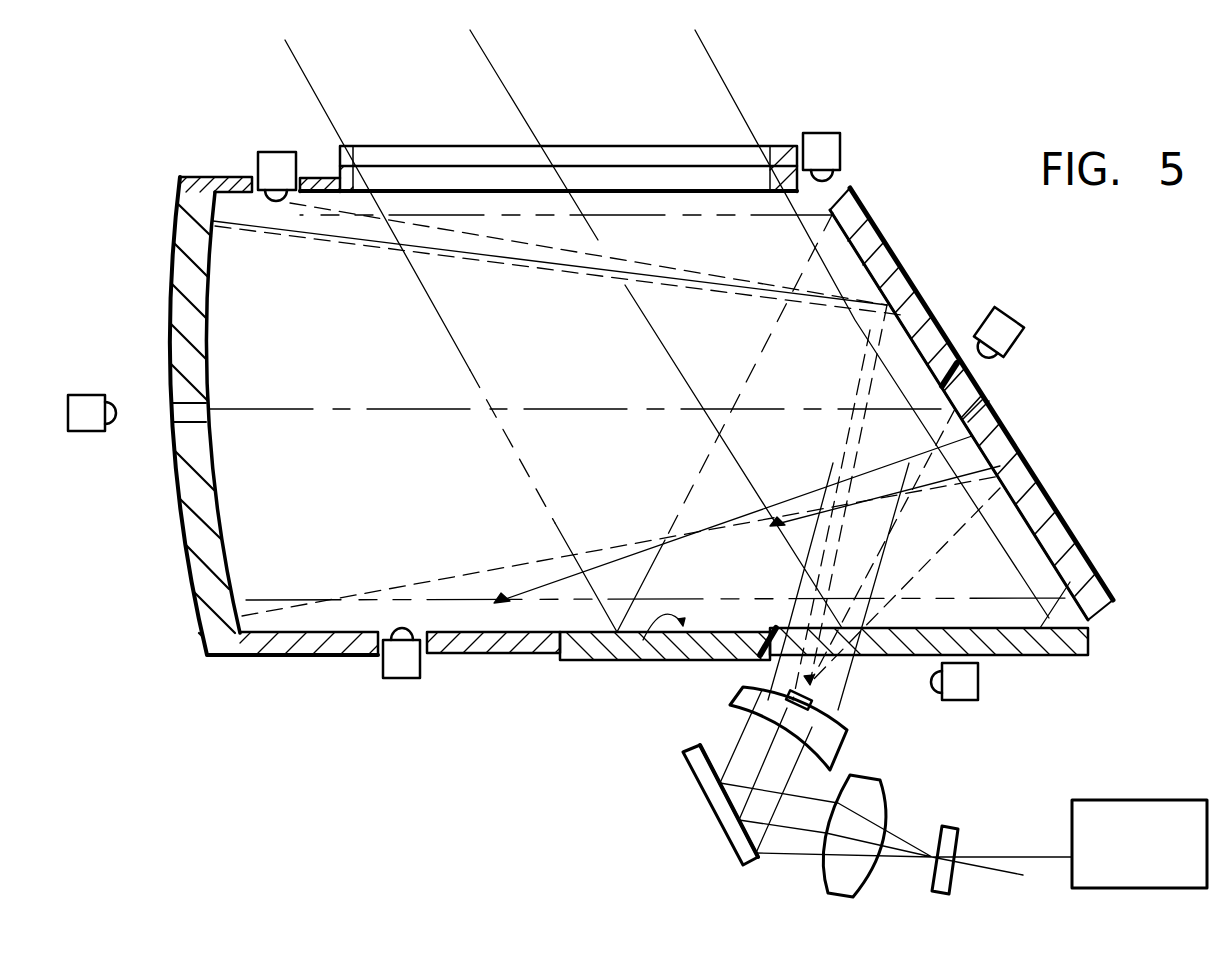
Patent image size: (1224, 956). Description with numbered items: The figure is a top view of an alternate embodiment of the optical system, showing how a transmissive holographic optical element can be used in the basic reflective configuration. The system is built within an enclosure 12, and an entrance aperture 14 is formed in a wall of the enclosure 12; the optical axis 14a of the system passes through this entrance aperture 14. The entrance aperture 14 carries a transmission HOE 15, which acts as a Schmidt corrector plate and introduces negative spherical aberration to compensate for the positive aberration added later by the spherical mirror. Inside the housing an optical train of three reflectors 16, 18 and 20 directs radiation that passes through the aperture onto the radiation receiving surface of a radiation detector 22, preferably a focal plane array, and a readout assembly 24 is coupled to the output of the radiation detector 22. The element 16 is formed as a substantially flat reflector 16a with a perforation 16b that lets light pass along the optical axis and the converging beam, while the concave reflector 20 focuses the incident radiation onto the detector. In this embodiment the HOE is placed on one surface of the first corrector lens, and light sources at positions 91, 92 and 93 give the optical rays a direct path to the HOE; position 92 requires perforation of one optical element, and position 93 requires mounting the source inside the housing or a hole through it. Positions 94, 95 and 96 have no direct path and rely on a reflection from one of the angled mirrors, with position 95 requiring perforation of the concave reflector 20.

The enclosure 12 is at (1066, 513).
The entrance aperture 14 is at (670, 150).
The optical axis 14a is at (665, 347).
The transmission HOE 15 is at (447, 177).
The reflector 16 is at (640, 655).
The flat reflector 16a is at (723, 662).
The perforation 16b is at (1070, 656).
The reflector 18 is at (996, 433).
The concave reflector 20 is at (190, 593).
The radiation detector 22 is at (961, 850).
The readout assembly 24 is at (1170, 800).
The light source position 91 is at (980, 684).
The light source position 92 is at (1014, 318).
The light source position 93 is at (842, 133).
The light source position 94 is at (278, 152).
The light source position 95 is at (93, 393).
The light source position 96 is at (423, 680).